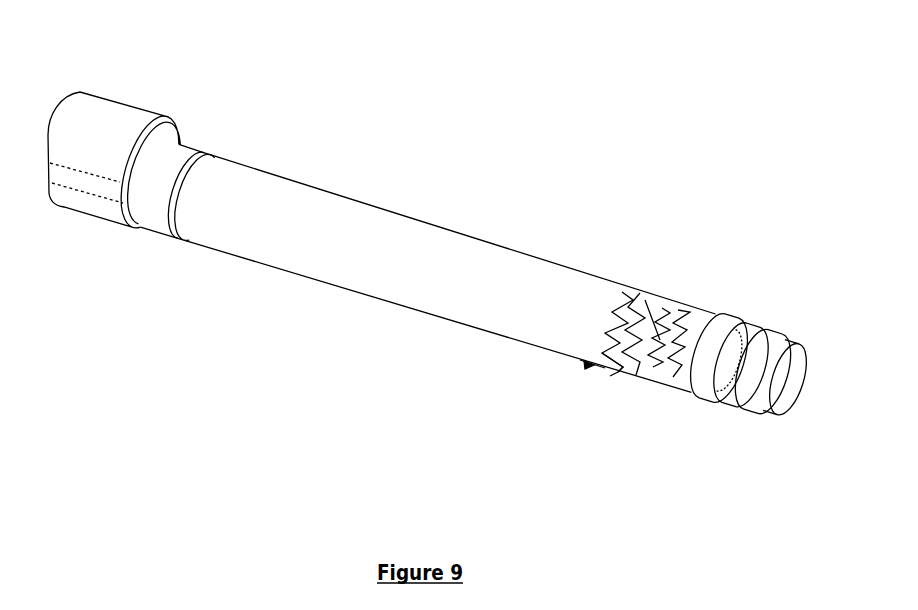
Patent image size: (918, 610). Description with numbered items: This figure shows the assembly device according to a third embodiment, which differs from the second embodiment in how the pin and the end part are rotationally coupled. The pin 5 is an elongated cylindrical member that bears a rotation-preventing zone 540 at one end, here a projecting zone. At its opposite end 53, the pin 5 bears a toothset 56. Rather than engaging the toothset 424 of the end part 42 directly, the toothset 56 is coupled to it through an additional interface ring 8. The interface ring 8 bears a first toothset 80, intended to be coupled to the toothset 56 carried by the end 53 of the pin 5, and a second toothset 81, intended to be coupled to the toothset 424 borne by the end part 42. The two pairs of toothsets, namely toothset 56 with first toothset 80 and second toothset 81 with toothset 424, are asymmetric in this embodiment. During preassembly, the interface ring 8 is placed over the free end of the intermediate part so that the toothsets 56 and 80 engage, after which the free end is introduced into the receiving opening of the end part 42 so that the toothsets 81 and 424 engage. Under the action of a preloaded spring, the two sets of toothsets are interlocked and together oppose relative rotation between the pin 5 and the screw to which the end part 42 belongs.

The rotation-preventing zone 540 is at (111, 130).
The pin 5 is at (323, 252).
The first toothset 80 is at (638, 323).
The interface ring 8 is at (660, 305).
The toothset of the end part 424 is at (680, 320).
The end part 42 is at (755, 350).
The end of the pin 53 is at (590, 366).
The toothset of the pin 56 is at (613, 365).
The second toothset 81 is at (657, 360).